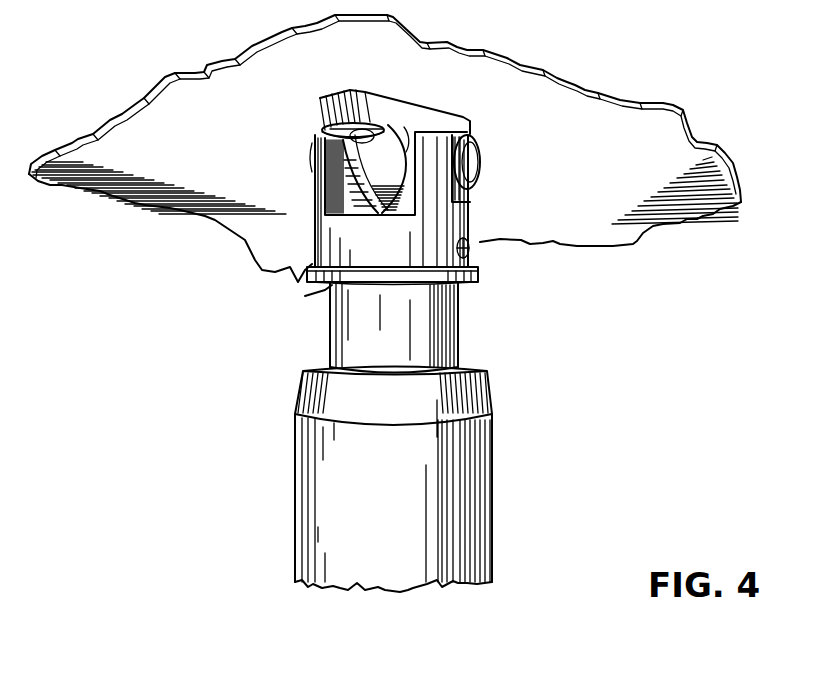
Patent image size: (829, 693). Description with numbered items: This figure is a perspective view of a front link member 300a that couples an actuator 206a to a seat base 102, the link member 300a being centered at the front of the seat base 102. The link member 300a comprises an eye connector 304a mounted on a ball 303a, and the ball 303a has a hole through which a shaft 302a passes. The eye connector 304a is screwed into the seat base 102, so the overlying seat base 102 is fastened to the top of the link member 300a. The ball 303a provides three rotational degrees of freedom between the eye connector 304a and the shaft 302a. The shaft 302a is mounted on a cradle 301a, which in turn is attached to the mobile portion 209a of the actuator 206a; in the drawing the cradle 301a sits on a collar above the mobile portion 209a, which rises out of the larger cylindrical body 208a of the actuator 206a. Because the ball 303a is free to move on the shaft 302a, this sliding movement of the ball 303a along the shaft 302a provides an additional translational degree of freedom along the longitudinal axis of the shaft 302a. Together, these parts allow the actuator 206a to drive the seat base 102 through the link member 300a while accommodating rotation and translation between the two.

The seat base 102 is at (580, 112).
The link member 300a is at (283, 109).
The cradle 301a is at (325, 237).
The shaft 302a is at (470, 162).
The ball 303a is at (412, 130).
The eye connector 304a is at (360, 86).
The actuator 206a is at (545, 388).
The base cylinder 208a is at (480, 488).
The mobile portion 209a is at (462, 307).